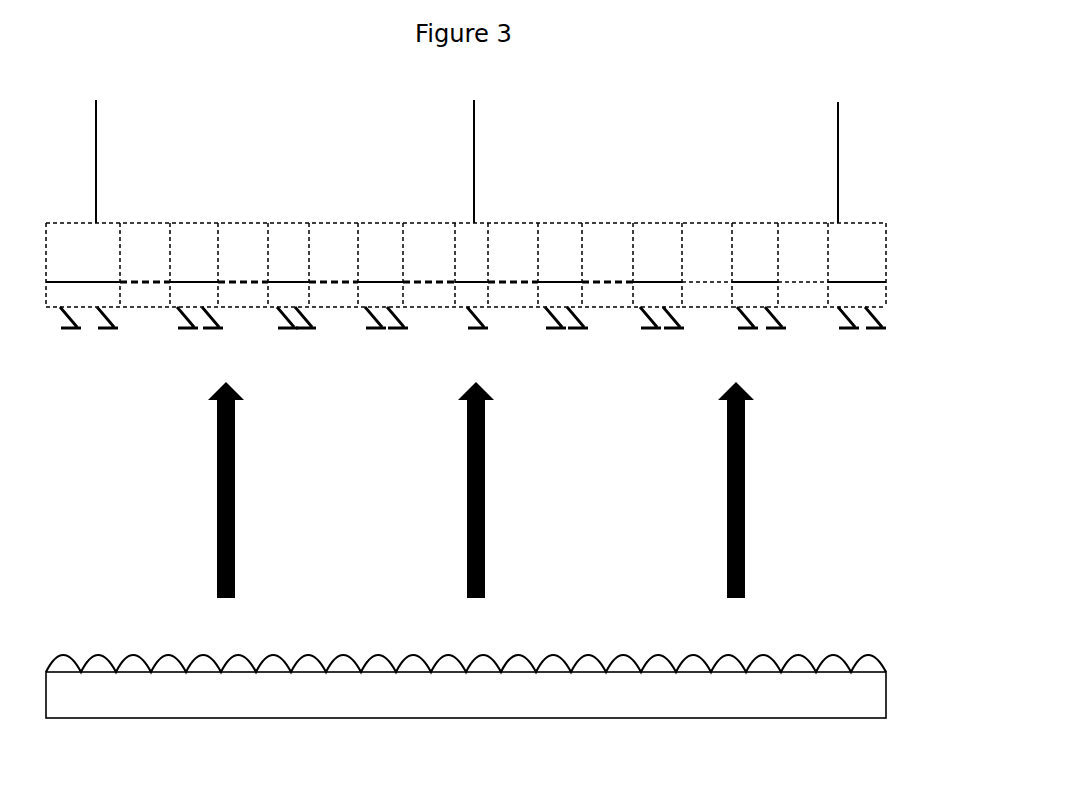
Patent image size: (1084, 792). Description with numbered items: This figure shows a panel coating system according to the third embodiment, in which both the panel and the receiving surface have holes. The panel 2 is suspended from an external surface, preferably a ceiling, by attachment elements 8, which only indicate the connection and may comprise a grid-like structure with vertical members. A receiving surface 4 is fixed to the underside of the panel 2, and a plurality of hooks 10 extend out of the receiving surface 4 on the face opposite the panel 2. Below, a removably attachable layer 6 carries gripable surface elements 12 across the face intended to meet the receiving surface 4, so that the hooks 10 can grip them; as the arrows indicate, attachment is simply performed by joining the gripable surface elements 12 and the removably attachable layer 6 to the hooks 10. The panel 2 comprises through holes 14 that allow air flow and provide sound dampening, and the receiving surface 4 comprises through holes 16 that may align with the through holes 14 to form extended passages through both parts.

The panel 2 is at (887, 248).
The receiving surface 4 is at (883, 308).
The removably attachable layer 6 is at (888, 700).
The attachment elements 8 is at (853, 153).
The hooks 10 is at (837, 327).
The gripable surface elements 12 is at (872, 665).
The through holes 14 is at (719, 252).
The through holes 16 is at (708, 300).